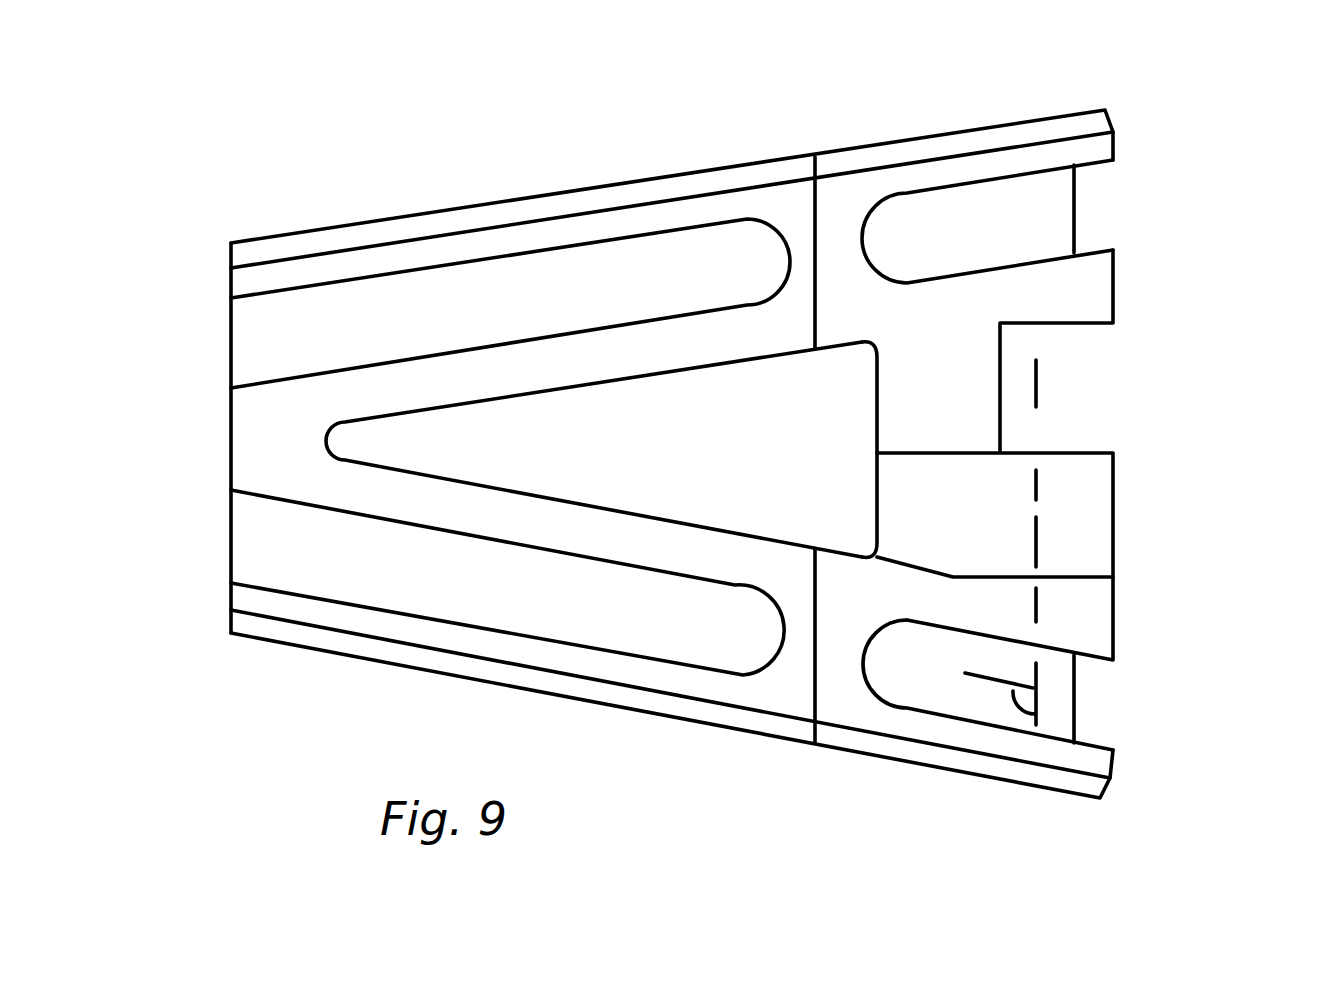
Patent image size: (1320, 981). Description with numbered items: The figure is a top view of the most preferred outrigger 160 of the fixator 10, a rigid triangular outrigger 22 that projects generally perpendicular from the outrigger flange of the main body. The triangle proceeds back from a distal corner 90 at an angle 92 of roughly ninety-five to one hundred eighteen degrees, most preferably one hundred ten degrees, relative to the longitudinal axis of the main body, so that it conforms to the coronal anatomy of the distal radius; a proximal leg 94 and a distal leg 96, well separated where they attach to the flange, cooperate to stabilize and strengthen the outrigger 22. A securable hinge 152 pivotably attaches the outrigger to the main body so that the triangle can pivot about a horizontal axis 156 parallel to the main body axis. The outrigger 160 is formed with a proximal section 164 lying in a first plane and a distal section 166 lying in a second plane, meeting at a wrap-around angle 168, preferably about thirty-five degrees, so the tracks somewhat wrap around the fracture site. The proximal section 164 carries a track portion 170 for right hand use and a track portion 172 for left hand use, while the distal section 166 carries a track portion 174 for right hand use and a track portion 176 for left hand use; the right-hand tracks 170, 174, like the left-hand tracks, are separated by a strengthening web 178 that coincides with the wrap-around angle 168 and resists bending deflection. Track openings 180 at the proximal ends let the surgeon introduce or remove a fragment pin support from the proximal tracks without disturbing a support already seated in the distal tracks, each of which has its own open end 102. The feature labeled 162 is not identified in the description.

The outrigger 22 is at (664, 165).
The distal corner 90 is at (1097, 765).
The angle 92 is at (1013, 700).
The proximal leg 94 is at (633, 257).
The distal leg 96 is at (497, 593).
The open end 102 is at (236, 318).
The securable hinge 152 is at (1073, 528).
The horizontal axis 156 is at (1037, 378).
The outrigger 160 is at (337, 225).
The lower block 162 is at (1113, 618).
The proximal section 164 is at (1106, 58).
The distal section 166 is at (803, 107).
The wrap-around angle 168 is at (812, 673).
The track portion for right hand use 170 is at (1052, 713).
The track portion for left hand use 172 is at (1057, 217).
The track portion for right hand use 174 is at (328, 573).
The track portion for left hand use 176 is at (395, 336).
The strengthening web 178 is at (792, 583).
The track opening 180 is at (1073, 183).
The fixator 10 is at (221, 530).